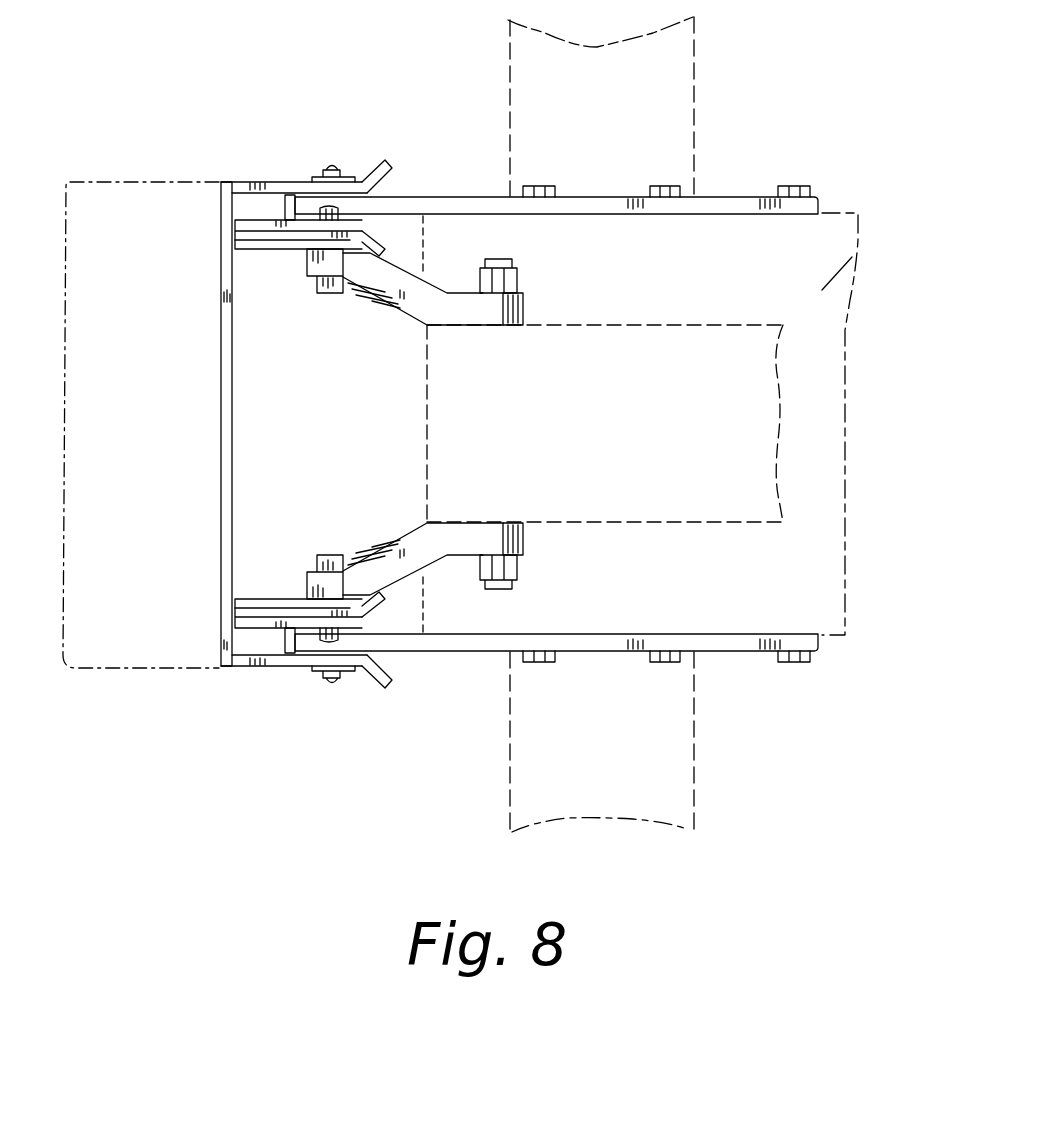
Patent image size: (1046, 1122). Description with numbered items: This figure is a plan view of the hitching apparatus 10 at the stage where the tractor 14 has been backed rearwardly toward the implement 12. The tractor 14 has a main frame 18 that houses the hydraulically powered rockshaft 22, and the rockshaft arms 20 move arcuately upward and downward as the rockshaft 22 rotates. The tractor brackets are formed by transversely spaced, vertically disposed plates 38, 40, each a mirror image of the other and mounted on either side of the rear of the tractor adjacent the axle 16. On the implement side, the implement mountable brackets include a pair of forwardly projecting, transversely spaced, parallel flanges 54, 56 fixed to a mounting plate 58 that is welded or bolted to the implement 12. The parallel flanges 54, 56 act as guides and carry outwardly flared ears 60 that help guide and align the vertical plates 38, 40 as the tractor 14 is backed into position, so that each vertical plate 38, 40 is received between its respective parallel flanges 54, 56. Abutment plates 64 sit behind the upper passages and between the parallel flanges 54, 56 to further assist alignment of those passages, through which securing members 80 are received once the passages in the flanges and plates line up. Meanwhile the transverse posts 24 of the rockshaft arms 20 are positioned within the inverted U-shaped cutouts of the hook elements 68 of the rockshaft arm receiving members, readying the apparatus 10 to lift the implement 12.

The apparatus 10 is at (305, 843).
The implement 12 is at (117, 655).
The tractor 14 is at (867, 204).
The axle 16 is at (680, 70).
The main frame 18 is at (862, 252).
The rockshaft arm 20 is at (410, 312).
The rockshaft 22 is at (500, 263).
The transverse post 24 is at (313, 253).
The vertically disposed plate 38 is at (455, 654).
The vertically disposed plate 40 is at (463, 196).
The parallel flange 54 is at (297, 181).
The parallel flange 56 is at (233, 224).
The mounting plate 58 is at (221, 413).
The outwardly flared ear 60 is at (377, 163).
The abutment plate 64 is at (283, 205).
The hook element 68 is at (270, 243).
The securing member 80 is at (330, 167).